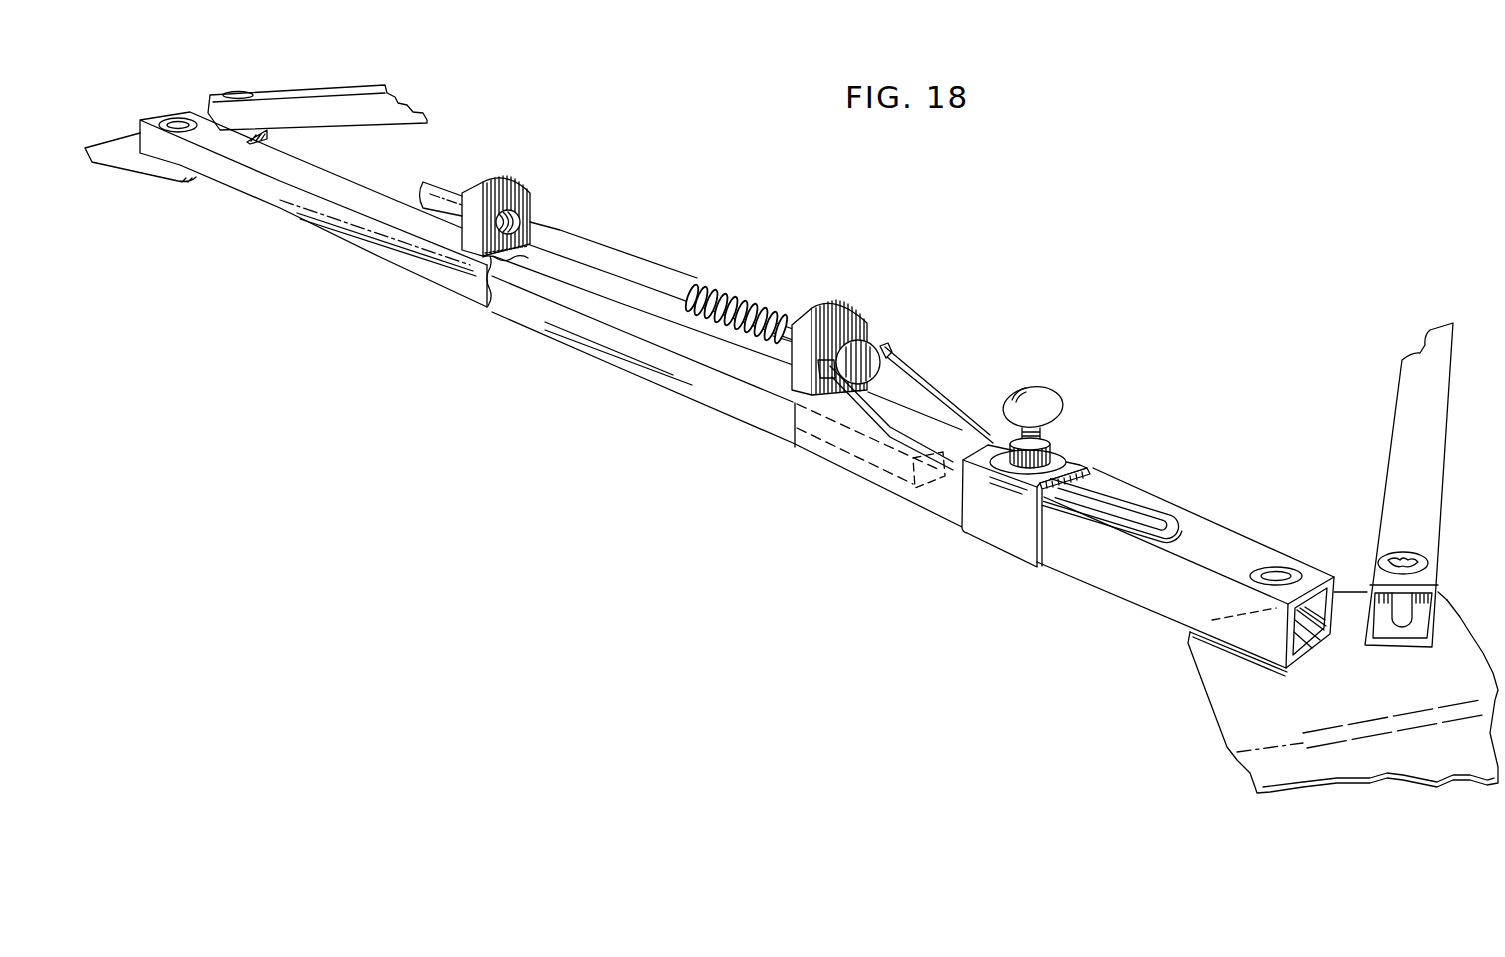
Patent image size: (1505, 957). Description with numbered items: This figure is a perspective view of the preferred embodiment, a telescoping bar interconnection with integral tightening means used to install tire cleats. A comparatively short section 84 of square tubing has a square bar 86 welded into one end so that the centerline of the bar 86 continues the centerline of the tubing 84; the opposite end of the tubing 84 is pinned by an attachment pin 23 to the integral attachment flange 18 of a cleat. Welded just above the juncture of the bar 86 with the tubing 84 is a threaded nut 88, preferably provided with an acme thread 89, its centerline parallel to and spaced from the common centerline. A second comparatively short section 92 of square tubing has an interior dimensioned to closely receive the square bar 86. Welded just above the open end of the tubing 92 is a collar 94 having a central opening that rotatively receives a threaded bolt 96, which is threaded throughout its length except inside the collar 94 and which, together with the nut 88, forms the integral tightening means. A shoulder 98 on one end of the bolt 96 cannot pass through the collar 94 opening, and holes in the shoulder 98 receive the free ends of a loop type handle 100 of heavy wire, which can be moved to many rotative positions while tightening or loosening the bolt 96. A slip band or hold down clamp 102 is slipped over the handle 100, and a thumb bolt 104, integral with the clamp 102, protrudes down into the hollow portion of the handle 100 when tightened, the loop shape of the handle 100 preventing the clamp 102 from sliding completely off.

The integral attachment flange 18 is at (151, 175).
The attachment pin 23 is at (178, 118).
The section of square tubing 84 is at (305, 215).
The square bar 86 is at (565, 331).
The threaded nut 88 is at (495, 182).
The acme thread 89 is at (520, 222).
The section of square tubing 92 is at (1202, 542).
The collar 94 is at (832, 305).
The threaded bolt 96 is at (722, 283).
The shoulder 98 is at (865, 341).
The loop type handle 100 is at (940, 385).
The hold down clamp 102 is at (1032, 556).
The thumb bolt 104 is at (1038, 388).